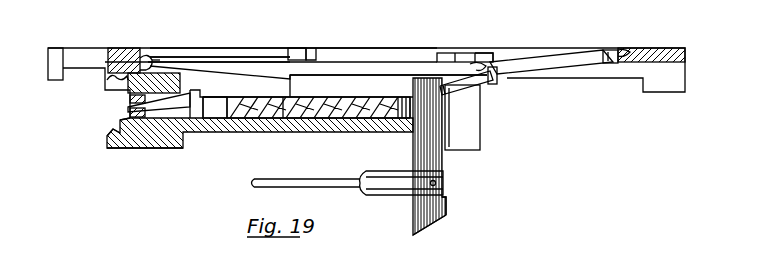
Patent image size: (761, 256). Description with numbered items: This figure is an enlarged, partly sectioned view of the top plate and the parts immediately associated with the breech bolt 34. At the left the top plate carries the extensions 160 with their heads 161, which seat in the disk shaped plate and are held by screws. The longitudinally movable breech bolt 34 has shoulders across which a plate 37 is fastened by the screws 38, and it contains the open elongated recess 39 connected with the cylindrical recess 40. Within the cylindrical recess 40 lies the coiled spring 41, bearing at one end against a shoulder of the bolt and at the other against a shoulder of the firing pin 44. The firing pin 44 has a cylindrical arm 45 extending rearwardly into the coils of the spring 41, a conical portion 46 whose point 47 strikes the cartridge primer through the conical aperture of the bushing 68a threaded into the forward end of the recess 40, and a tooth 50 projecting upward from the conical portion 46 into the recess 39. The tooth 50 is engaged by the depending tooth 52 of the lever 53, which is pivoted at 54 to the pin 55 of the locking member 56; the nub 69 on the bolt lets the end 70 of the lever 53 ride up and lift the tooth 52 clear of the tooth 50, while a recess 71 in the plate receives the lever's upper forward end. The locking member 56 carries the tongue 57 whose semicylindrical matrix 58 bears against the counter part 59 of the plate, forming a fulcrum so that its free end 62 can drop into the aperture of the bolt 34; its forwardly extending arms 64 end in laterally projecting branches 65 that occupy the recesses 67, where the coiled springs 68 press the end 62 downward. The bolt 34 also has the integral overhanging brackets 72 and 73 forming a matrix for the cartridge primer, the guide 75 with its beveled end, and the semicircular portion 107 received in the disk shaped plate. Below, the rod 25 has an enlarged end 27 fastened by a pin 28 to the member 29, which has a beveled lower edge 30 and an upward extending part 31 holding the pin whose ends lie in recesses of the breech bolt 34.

The rod 25 is at (320, 178).
The enlarged end of rod 27 is at (448, 180).
The pin 28 is at (436, 185).
The member 29 is at (448, 212).
The beveled lower edge 30 is at (432, 230).
The upward extending part 31 is at (418, 152).
The breech bolt 34 is at (252, 133).
The plate 37 is at (311, 58).
The screws 38 is at (294, 50).
The open elongated recess 39 is at (376, 88).
The cylindrical recess 40 is at (240, 122).
The coiled spring 41 is at (363, 128).
The firing pin 44 is at (208, 135).
The cylindrical arm 45 is at (266, 128).
The conical portion 46 is at (142, 148).
The point 47 is at (128, 108).
The tooth 50 is at (193, 95).
The depending tooth 52 is at (276, 82).
The lever 53 is at (217, 62).
The pivot 54 is at (507, 80).
The pin 55 is at (491, 84).
The locking member 56 is at (552, 68).
The tongue 57 is at (610, 50).
The matrix 58 is at (630, 54).
The counter part 59 is at (664, 52).
The free end 62 is at (474, 68).
The forwardly extending arms 64 is at (466, 88).
The laterally projecting branches 65 is at (459, 117).
The recesses 67 is at (462, 54).
The coiled springs 68 is at (484, 58).
The bushing 68a is at (130, 114).
The nub 69 is at (145, 56).
The end of lever 70 is at (158, 61).
The recess 71 is at (150, 58).
The overhanging bracket 72 is at (107, 78).
The overhanging bracket 73 is at (114, 148).
The guide 75 is at (164, 150).
The semicircular portion 107 is at (283, 128).
The extensions 160 is at (78, 56).
The heads 161 is at (52, 70).